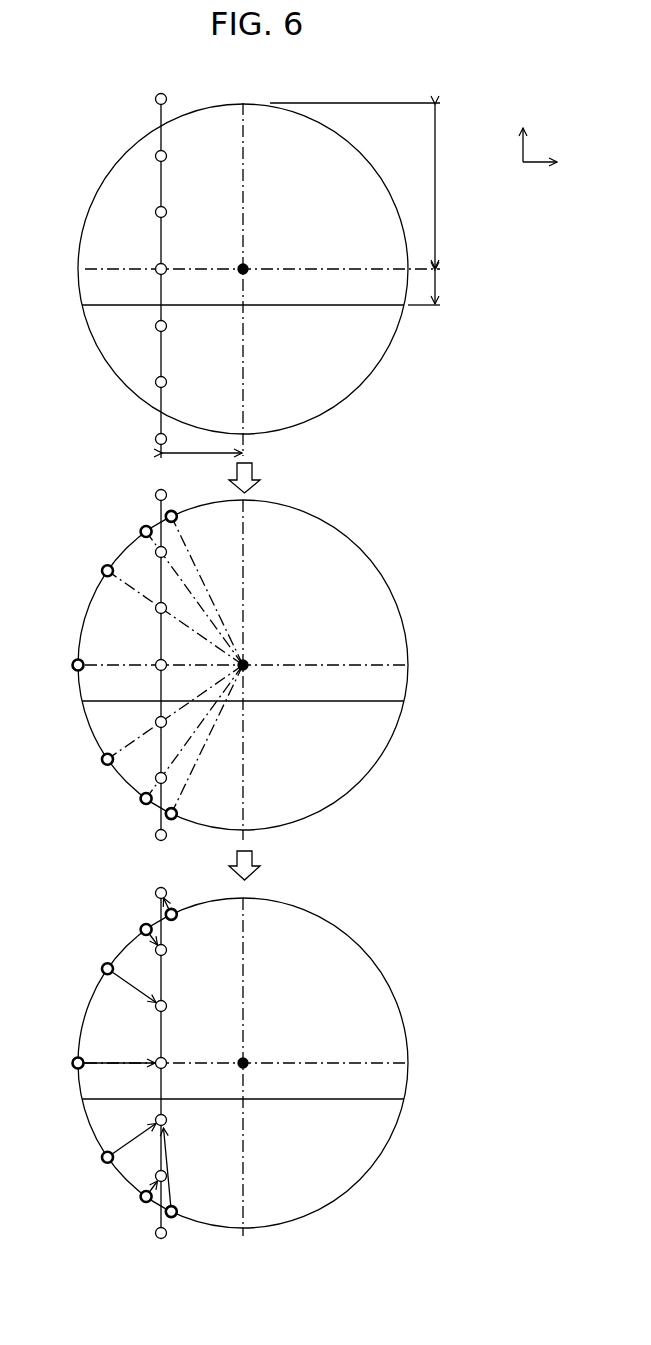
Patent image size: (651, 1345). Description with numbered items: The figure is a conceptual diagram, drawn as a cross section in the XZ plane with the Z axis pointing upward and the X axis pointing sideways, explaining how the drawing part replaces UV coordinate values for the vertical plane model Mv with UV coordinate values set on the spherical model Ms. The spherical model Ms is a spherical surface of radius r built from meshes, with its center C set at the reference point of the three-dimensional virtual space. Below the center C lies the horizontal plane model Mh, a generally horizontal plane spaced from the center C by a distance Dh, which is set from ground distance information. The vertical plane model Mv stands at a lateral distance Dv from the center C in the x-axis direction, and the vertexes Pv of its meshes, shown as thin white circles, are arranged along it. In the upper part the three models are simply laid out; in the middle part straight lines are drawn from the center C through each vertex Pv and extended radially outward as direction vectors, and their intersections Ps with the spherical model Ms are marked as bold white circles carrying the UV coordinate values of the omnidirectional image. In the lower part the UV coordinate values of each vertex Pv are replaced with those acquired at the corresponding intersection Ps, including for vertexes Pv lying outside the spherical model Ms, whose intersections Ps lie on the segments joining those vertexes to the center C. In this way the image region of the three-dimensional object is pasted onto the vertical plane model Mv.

The spherical model Ms is at (124, 153).
The horizontal plane model Mh is at (326, 302).
The vertical plane model Mv is at (168, 351).
The vertex Pv is at (160, 263).
The intersection Ps is at (77, 661).
The center C is at (249, 265).
The radius r is at (363, 185).
The distance Dh is at (442, 287).
The distance Dv is at (202, 470).
The Z axis Z is at (524, 129).
The X axis X is at (549, 163).